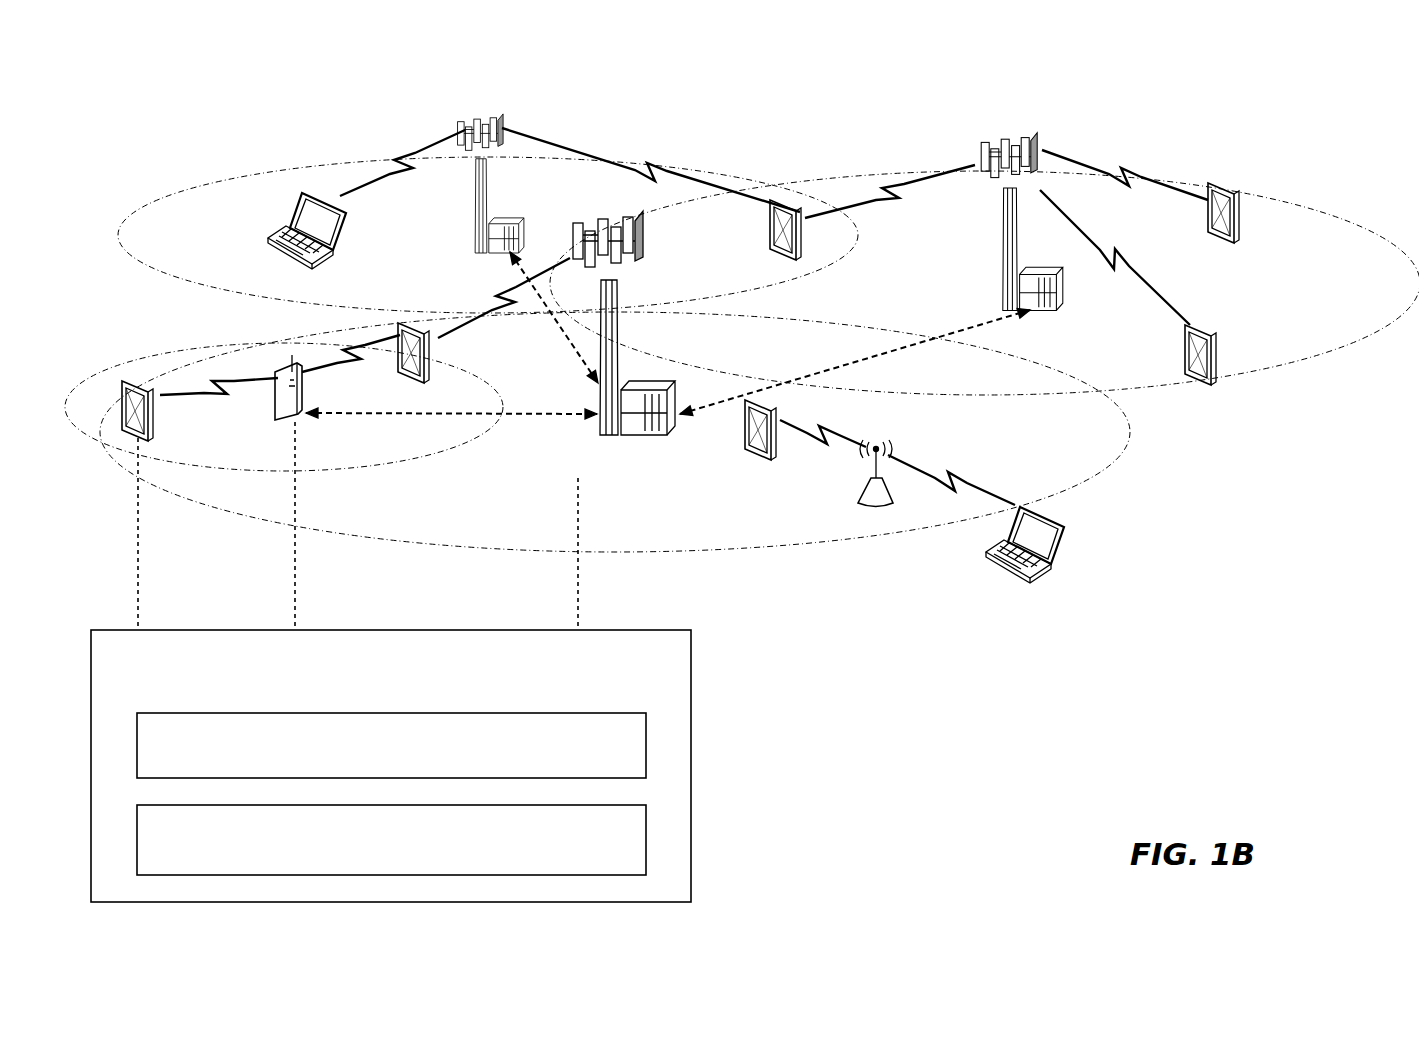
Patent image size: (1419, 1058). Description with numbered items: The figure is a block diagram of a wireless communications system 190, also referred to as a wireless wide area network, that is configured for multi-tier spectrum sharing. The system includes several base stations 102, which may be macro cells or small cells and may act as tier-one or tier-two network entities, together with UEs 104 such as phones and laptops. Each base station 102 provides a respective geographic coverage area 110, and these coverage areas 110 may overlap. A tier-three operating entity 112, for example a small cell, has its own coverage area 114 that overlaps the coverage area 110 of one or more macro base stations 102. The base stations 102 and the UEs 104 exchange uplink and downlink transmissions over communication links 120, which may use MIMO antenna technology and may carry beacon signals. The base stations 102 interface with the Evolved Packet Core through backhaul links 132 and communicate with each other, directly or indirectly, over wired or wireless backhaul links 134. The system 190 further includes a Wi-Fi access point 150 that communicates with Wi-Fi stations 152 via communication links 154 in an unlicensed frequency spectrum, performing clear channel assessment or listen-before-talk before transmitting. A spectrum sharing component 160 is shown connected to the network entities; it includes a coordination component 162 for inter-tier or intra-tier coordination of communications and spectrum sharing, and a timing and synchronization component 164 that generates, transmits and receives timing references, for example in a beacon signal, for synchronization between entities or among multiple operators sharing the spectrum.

The wireless communications system 190 is at (191, 97).
The geographic coverage area 110 is at (178, 297).
The coverage area 114 is at (325, 471).
The base station 102 is at (474, 216).
The backhaul link 132 is at (513, 203).
The UE 104 is at (322, 256).
The communication link 120 is at (397, 163).
The tier-3 operating entity 112 is at (280, 409).
The backhaul link 134 is at (565, 340).
The Wi-Fi access point 150 is at (885, 508).
The Wi-Fi station 152 is at (745, 430).
The communication link 154 is at (818, 428).
The spectrum sharing component 160 is at (584, 683).
The coordination component 162 is at (552, 754).
The timing and synchronization component 164 is at (632, 847).